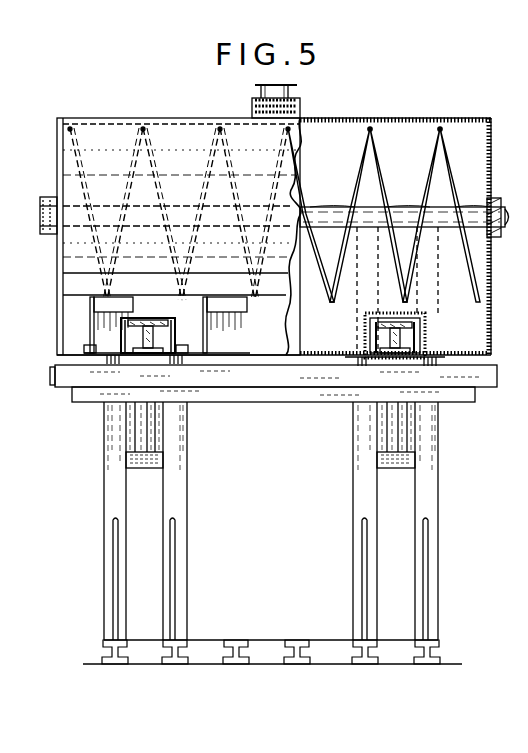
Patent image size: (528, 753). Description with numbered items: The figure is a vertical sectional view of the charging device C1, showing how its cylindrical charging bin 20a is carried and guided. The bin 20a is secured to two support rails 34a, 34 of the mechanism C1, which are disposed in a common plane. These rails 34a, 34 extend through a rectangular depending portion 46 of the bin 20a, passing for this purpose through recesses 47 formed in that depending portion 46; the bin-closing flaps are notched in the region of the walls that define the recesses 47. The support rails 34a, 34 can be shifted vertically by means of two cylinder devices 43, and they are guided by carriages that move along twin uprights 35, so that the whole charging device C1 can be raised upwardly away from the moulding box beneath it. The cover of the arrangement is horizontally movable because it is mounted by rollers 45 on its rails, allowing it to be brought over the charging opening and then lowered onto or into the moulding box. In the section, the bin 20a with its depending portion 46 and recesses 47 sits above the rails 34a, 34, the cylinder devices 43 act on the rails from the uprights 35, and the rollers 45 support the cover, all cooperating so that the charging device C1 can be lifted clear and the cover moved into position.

The charging bin 20a is at (270, 214).
The charging device C1 is at (396, 213).
The rectangular depending portion 46 is at (274, 214).
The support rail 34a is at (144, 318).
The support rail 34 is at (380, 333).
The rollers 45 is at (174, 318).
The recesses 47 is at (172, 347).
The cylinder devices 43 is at (152, 428).
The twin uprights 35 is at (118, 493).